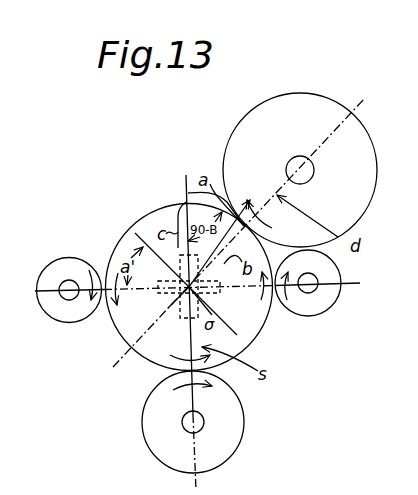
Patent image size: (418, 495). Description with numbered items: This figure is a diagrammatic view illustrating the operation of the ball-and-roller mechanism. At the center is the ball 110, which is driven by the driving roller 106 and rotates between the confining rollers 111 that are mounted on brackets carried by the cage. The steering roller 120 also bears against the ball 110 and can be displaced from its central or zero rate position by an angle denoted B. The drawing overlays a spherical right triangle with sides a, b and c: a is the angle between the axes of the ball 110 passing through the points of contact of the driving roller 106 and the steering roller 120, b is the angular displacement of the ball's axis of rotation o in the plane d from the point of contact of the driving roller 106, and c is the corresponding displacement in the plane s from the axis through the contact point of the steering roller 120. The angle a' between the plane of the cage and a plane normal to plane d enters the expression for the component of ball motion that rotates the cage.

The driving roller 106 is at (362, 140).
The ball 110 is at (253, 320).
The confining rollers 111 is at (55, 308).
The steering roller 120 is at (233, 418).